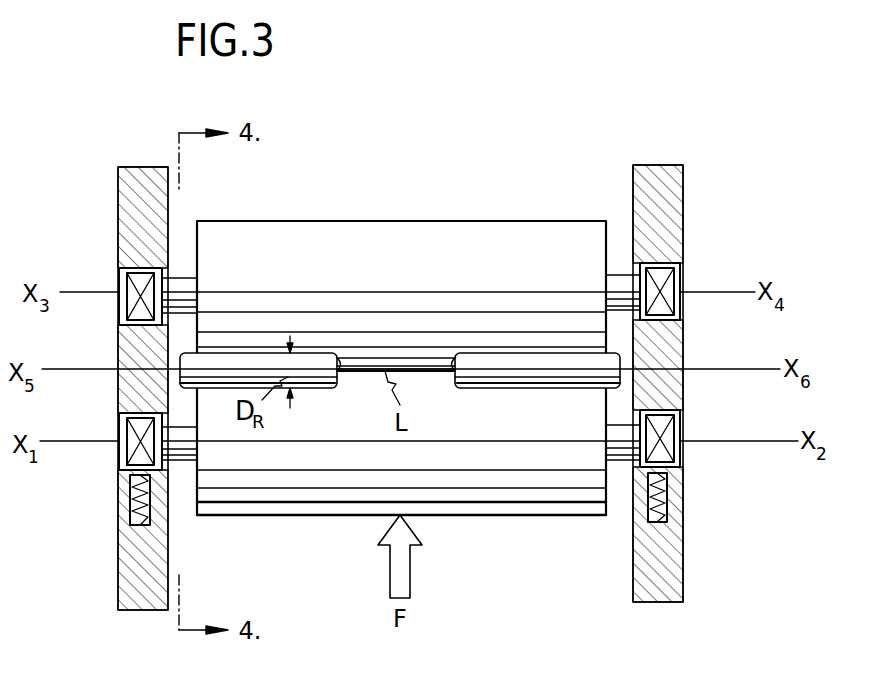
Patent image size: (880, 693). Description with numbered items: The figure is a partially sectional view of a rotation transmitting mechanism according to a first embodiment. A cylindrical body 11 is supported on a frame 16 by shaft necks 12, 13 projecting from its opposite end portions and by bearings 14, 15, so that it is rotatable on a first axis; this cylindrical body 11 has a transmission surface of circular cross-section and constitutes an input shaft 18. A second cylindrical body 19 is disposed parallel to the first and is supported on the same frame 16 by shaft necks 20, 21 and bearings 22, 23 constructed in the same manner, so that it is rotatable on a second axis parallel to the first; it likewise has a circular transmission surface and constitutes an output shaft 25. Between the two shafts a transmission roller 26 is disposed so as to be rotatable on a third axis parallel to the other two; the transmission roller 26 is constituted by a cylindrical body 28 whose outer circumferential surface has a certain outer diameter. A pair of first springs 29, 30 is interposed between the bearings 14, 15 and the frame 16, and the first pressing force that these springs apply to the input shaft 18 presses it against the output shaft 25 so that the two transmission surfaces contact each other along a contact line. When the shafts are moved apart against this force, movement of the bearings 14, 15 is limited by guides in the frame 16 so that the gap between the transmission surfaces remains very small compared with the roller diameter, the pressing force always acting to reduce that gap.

The cylindrical body 11 is at (485, 503).
The shaft neck 12 is at (182, 458).
The shaft neck 13 is at (623, 460).
The bearing 14 is at (125, 416).
The bearing 15 is at (667, 428).
The frame 16 is at (128, 223).
The input shaft 18 is at (508, 542).
The cylindrical body 19 is at (401, 232).
The shaft neck 20 is at (188, 285).
The shaft neck 21 is at (622, 275).
The bearing 22 is at (135, 300).
The bearing 23 is at (672, 300).
The output shaft 25 is at (476, 208).
The transmission roller 26 is at (549, 347).
The cylindrical body 28 is at (476, 356).
The first spring 29 is at (120, 495).
The first spring 30 is at (667, 505).